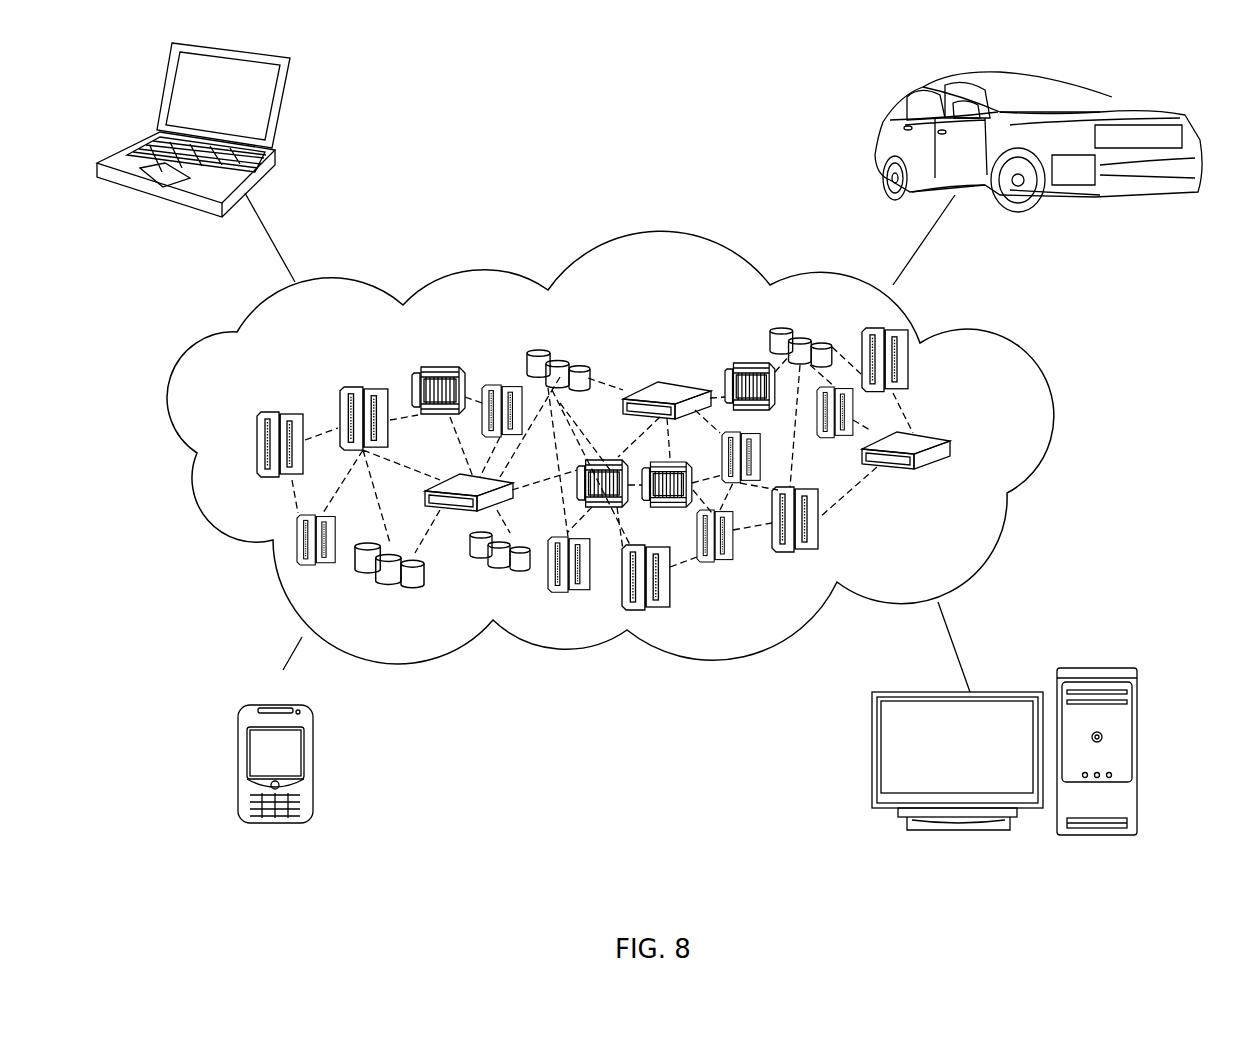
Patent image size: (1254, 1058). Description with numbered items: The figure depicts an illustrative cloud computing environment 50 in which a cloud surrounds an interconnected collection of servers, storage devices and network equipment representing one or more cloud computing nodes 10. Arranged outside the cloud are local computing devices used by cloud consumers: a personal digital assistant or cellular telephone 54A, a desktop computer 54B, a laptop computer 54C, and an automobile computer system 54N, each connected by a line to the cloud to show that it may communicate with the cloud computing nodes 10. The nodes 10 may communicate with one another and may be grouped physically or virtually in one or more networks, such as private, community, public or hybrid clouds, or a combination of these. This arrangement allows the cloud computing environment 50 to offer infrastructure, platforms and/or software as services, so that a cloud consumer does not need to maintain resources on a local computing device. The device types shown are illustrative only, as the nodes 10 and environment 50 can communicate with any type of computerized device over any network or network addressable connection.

The cloud computing environment 50 is at (1015, 353).
The cloud computing nodes 10 is at (987, 445).
The personal digital assistant (PDA) or cellular telephone 54A is at (238, 768).
The desktop computer 54B is at (1100, 663).
The laptop computer 54C is at (277, 117).
The automobile computer system 54N is at (880, 123).